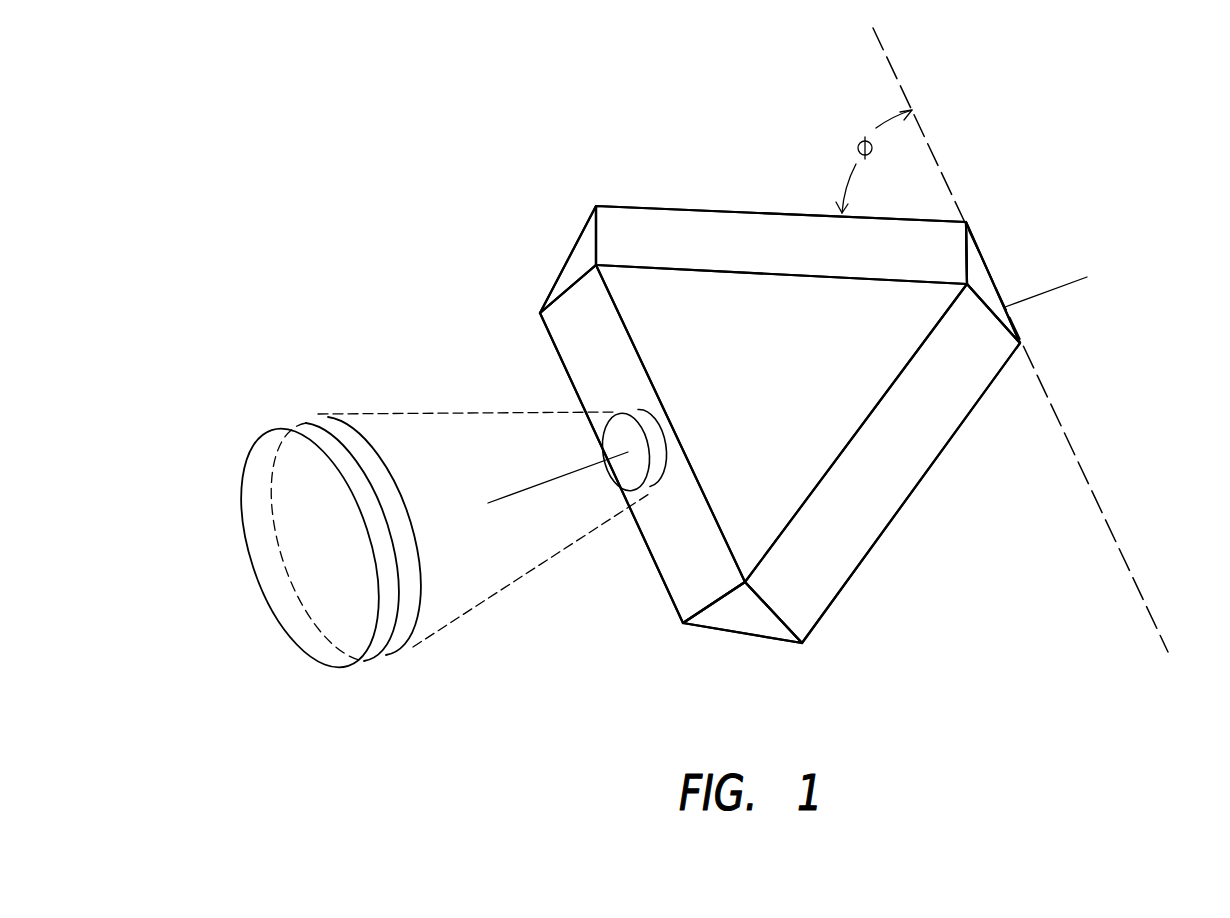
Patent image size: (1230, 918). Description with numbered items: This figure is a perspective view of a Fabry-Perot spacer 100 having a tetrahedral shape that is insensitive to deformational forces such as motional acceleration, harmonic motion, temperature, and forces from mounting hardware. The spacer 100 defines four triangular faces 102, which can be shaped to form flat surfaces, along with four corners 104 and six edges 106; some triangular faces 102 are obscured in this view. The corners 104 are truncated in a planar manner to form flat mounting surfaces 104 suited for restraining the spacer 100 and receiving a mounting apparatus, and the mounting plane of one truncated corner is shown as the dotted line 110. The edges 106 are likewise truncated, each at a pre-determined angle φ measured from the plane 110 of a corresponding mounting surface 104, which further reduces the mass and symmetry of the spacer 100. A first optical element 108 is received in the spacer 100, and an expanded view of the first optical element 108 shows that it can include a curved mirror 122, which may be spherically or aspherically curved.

The Fabry-Perot spacer 100 is at (508, 181).
The triangular face 102 is at (811, 428).
The corner 104 is at (585, 243).
The edge 106 is at (668, 232).
The first optical element 108 is at (620, 412).
The mounting plane 110 is at (1087, 475).
The curved mirror 122 is at (300, 440).